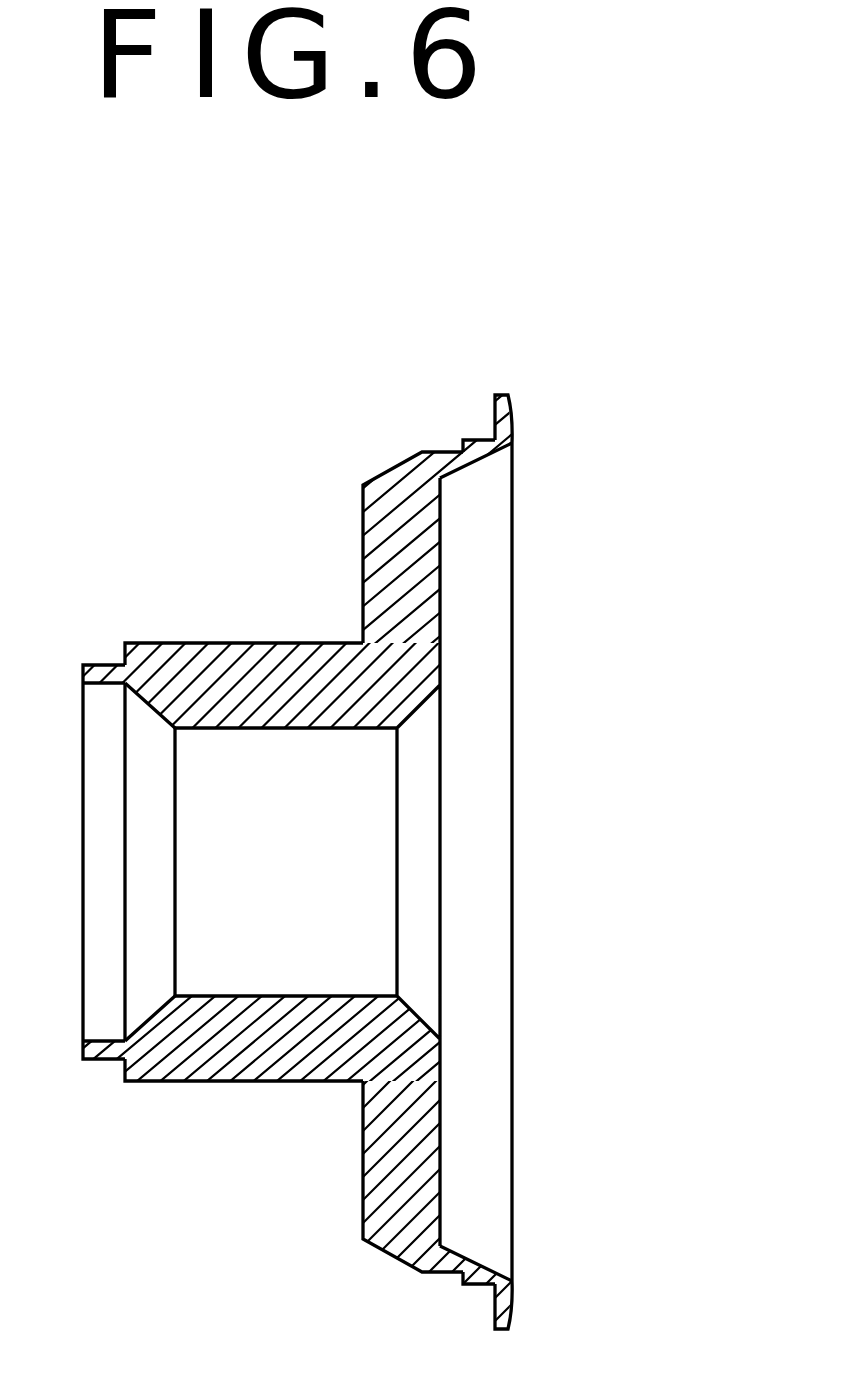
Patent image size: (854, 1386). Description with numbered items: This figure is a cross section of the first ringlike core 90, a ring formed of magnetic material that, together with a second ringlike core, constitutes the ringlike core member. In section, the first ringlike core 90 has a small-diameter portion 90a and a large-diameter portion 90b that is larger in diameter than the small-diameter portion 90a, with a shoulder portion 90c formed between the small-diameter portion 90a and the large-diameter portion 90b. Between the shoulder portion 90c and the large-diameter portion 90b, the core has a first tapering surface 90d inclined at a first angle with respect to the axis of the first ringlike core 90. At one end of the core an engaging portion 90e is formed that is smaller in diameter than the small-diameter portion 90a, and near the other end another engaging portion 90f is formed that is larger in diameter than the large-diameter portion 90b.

The first ringlike core 90 is at (290, 540).
The small-diameter portion 90a is at (250, 642).
The large-diameter portion 90b is at (438, 447).
The shoulder portion 90c is at (363, 1170).
The first tapering surface 90d is at (382, 472).
The engaging portion 90e is at (103, 663).
The engaging portion 90f is at (482, 435).